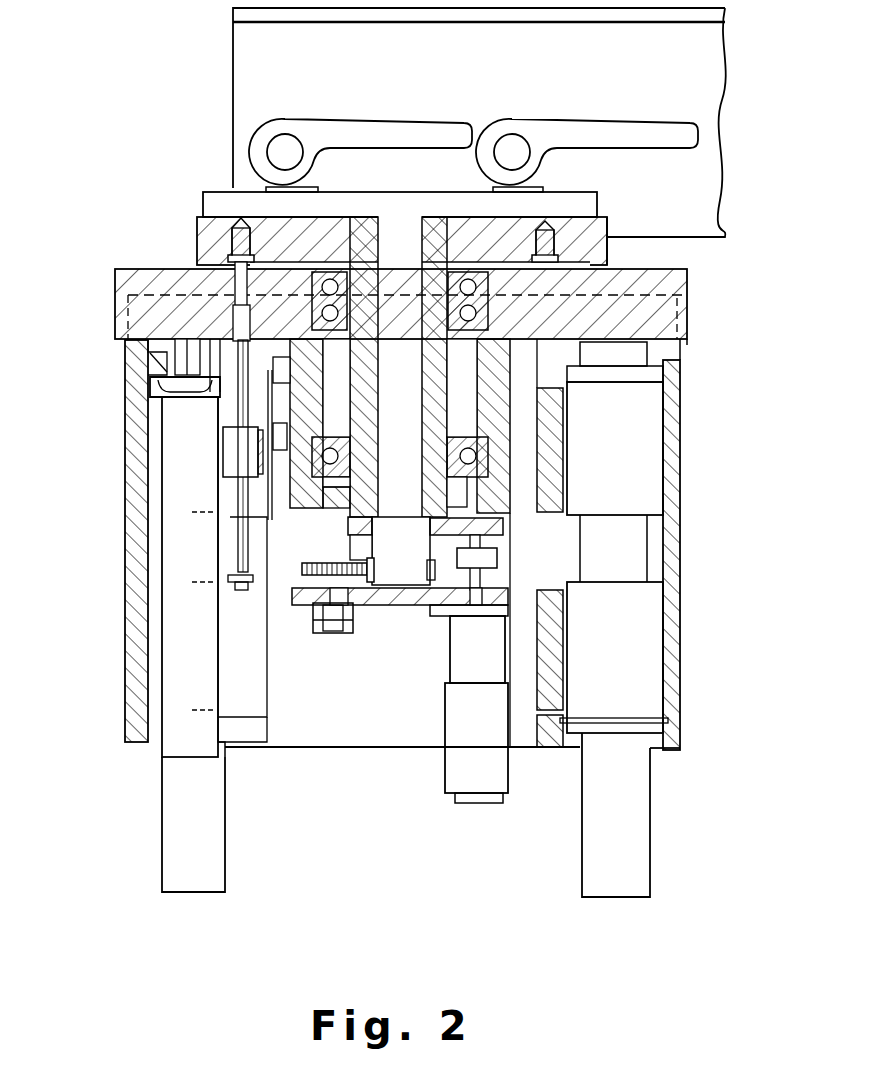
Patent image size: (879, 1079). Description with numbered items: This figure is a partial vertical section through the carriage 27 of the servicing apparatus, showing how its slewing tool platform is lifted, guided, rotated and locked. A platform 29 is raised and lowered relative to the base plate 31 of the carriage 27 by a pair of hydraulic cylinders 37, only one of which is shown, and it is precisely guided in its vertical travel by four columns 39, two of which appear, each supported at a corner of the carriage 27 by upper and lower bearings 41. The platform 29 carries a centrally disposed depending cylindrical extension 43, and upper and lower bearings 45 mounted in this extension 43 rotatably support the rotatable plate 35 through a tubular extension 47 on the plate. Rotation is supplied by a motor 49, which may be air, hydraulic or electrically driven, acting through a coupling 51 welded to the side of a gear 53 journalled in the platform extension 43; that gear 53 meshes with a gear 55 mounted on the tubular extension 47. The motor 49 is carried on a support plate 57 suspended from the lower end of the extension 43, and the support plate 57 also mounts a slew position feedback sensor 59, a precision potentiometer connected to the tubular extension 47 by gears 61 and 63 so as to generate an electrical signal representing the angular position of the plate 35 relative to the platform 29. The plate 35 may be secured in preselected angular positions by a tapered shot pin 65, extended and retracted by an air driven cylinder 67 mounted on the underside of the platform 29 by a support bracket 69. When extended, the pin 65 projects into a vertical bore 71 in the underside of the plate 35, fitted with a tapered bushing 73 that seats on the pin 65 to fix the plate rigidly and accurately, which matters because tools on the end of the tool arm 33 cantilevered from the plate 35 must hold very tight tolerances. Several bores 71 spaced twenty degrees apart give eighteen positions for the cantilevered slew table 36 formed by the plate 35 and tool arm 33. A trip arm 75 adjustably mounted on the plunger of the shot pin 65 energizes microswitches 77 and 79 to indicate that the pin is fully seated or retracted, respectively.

The carriage 27 is at (118, 497).
The platform 29 is at (115, 315).
The base plate 31 is at (135, 349).
The tool arm 33 is at (233, 62).
The rotatable plate 35 is at (607, 257).
The cantilevered slew table 36 is at (203, 190).
The hydraulic cylinders 37 is at (178, 666).
The columns 39 is at (228, 838).
The upper and lower bearings 41 is at (640, 463).
The cylindrical extension 43 is at (282, 508).
The upper and lower bearings 45 is at (468, 337).
The tubular extension 47 is at (378, 460).
The motor 49 is at (445, 770).
The coupling 51 is at (497, 560).
The gear 53 is at (503, 530).
The gear 55 is at (348, 527).
The support plate 57 is at (303, 606).
The slew position feedback sensor 59 is at (337, 634).
The gear 61 is at (302, 570).
The gear 63 is at (367, 561).
The tapered shot pin 65 is at (115, 276).
The air driven cylinder 67 is at (237, 459).
The support bracket 69 is at (263, 462).
The vertical bore 71 is at (232, 221).
The tapered bushing 73 is at (197, 241).
The trip arm 75 is at (222, 405).
The microswitch 77 is at (288, 370).
The microswitch 79 is at (287, 432).